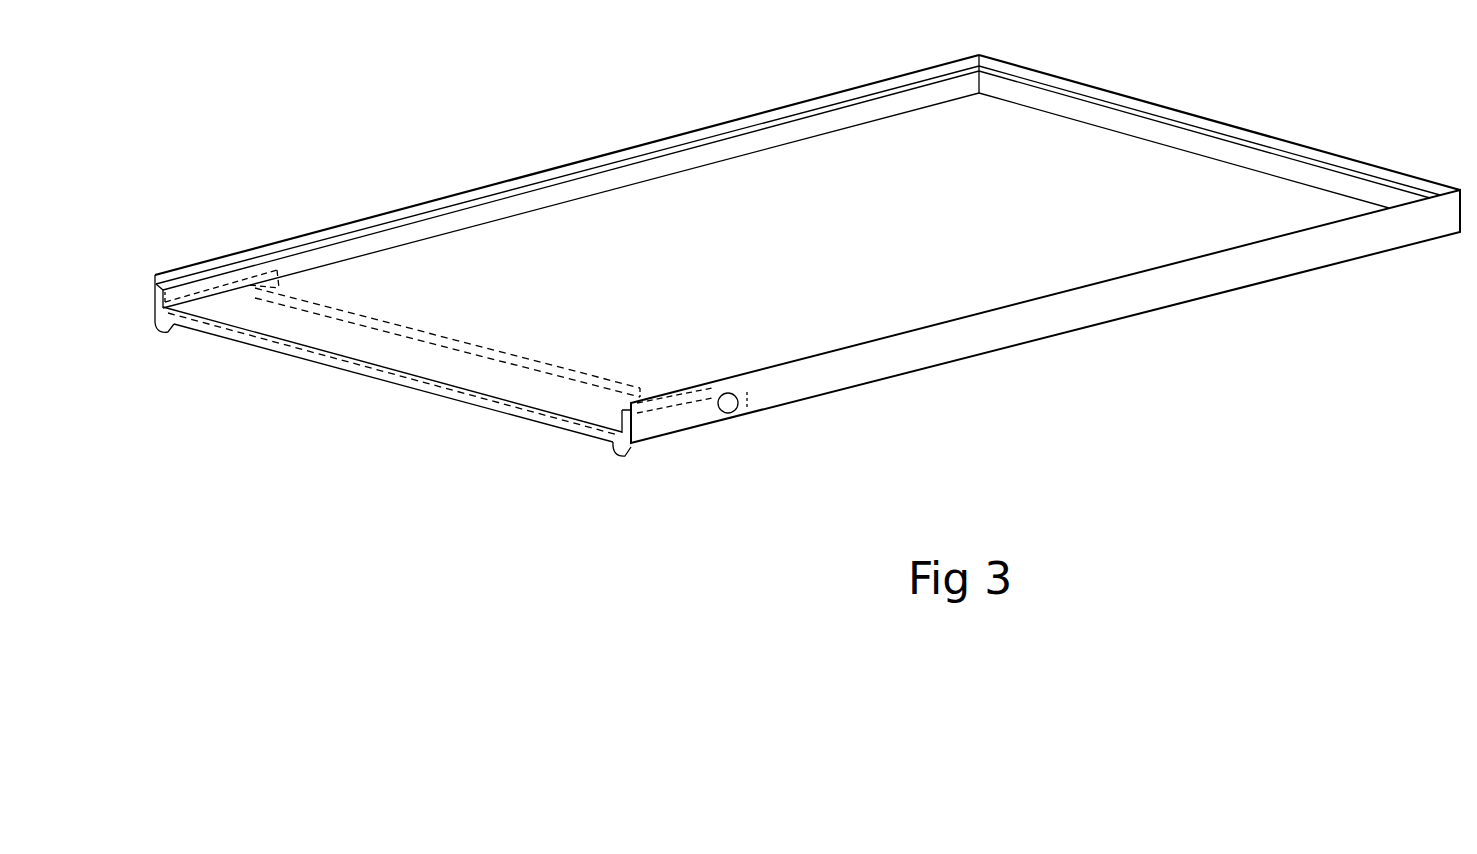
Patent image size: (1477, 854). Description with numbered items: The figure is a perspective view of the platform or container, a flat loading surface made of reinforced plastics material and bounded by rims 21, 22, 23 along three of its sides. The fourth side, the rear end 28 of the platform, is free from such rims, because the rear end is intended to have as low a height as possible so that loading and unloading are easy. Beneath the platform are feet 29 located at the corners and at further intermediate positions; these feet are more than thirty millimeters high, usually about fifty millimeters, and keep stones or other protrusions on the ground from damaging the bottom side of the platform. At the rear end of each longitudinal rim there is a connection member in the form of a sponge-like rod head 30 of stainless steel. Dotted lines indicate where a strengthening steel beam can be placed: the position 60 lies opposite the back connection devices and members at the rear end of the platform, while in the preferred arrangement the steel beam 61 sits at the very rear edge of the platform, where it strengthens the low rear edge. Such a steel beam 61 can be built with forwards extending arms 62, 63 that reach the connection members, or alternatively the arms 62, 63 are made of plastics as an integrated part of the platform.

The rim 21 is at (1222, 275).
The rim 22 is at (577, 160).
The rim 23 is at (1200, 108).
The rear end 28 is at (468, 408).
The feet 29 is at (622, 447).
The rod head 30 is at (745, 398).
The steel beam position 60 is at (412, 340).
The steel beam 61 is at (232, 335).
The forwards extending arm 62 is at (662, 428).
The forwards extending arm 63 is at (205, 282).